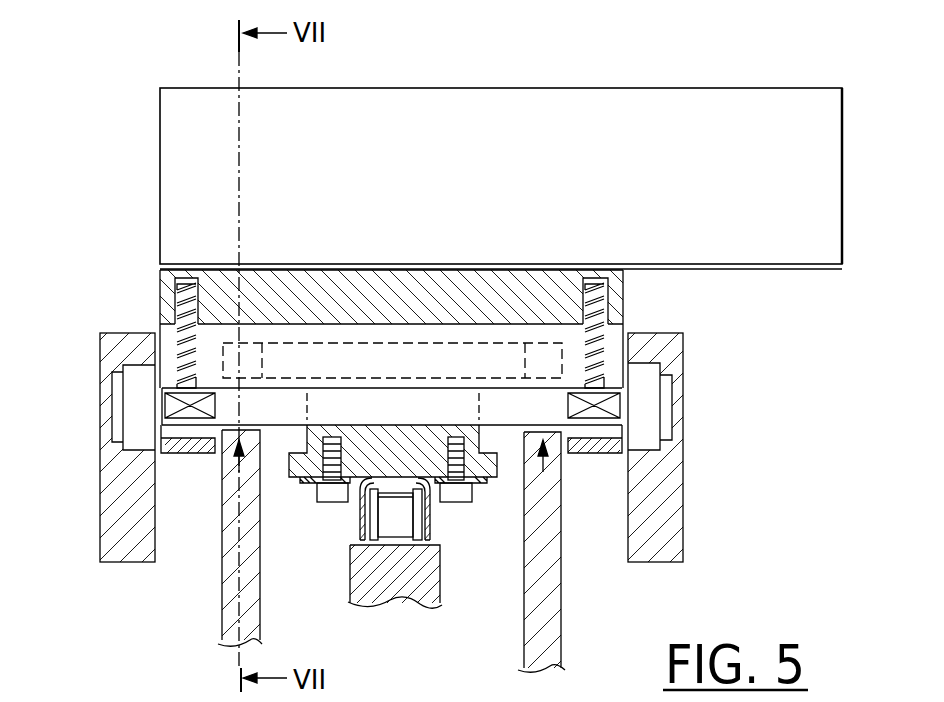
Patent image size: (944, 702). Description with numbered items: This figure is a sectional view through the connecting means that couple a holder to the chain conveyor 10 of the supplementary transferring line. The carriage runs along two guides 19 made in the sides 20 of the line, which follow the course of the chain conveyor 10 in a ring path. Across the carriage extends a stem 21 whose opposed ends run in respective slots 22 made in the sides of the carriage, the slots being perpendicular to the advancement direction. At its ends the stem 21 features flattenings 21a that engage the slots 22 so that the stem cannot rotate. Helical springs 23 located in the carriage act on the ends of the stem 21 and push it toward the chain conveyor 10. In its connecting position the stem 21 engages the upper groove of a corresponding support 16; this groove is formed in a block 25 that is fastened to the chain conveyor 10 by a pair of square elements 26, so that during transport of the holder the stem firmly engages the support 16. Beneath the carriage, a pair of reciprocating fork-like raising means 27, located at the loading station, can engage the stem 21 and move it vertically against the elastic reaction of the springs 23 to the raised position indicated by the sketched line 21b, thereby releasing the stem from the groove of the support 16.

The chain conveyor 10 is at (398, 513).
The support 16 is at (342, 523).
The guide 19 is at (640, 447).
The side 20 is at (110, 483).
The stem 21 is at (503, 405).
The flattening 21a is at (615, 408).
The raised position of the stem 21b is at (410, 343).
The slot 22 is at (170, 337).
The helical spring 23 is at (177, 297).
The block 25 is at (373, 447).
The square element 26 is at (432, 518).
The fork-like raising means 27 is at (227, 610).